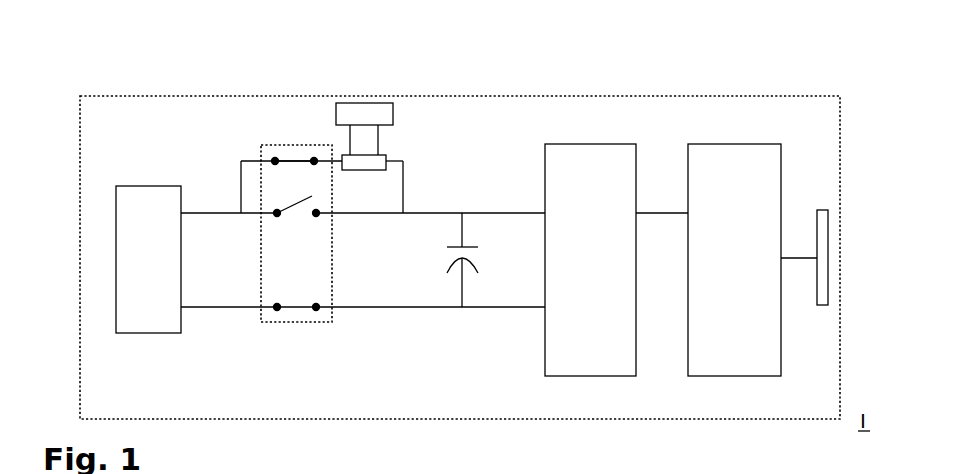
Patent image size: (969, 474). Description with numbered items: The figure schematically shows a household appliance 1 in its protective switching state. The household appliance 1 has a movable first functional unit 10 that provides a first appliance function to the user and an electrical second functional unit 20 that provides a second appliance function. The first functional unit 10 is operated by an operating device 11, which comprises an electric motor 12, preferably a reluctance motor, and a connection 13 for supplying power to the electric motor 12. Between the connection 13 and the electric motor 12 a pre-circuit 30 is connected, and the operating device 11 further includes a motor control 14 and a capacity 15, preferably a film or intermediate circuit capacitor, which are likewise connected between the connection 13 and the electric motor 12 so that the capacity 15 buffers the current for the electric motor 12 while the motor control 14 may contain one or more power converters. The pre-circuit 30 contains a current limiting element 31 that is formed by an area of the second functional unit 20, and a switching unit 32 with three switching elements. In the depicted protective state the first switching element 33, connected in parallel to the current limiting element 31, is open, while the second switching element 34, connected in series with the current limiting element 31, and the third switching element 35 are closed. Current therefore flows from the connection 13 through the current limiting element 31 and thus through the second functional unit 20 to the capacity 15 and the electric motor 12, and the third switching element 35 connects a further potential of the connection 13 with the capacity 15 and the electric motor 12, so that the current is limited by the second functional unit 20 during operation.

The household appliance 1 is at (135, 97).
The first functional unit 10 is at (823, 222).
The operating device 11 is at (770, 114).
The electric motor 12 is at (702, 347).
The connection 13 is at (143, 313).
The motor control 14 is at (552, 343).
The capacity 15 is at (467, 245).
The second functional unit 20 is at (416, 126).
The pre-circuit 30 is at (381, 368).
The current limiting element 31 is at (377, 162).
The switching unit 32 is at (300, 147).
The first switching element 33 is at (290, 208).
The second switching element 34 is at (306, 161).
The third switching element 35 is at (302, 307).